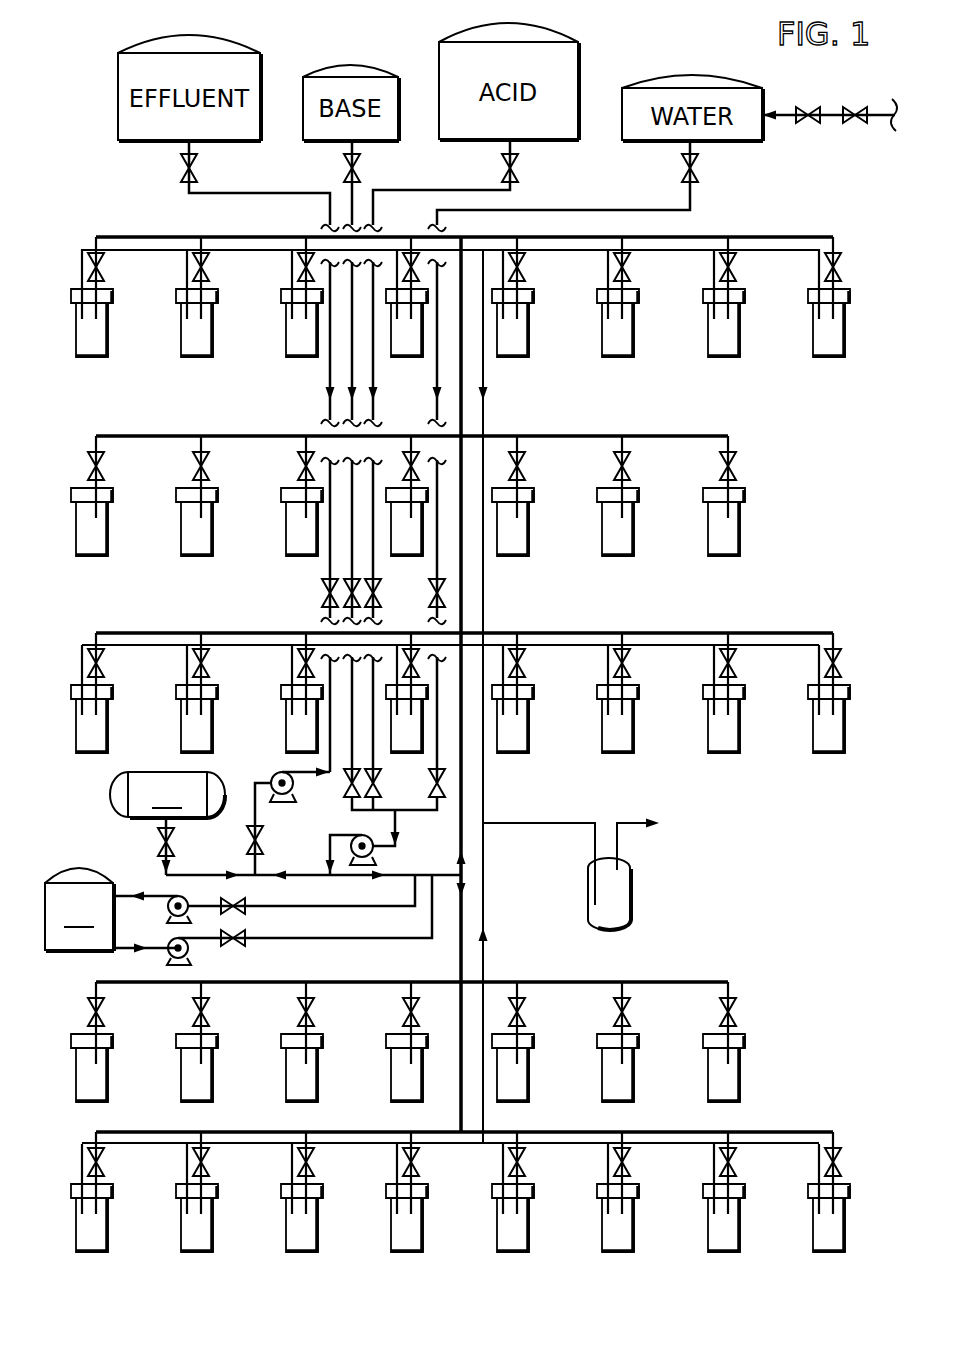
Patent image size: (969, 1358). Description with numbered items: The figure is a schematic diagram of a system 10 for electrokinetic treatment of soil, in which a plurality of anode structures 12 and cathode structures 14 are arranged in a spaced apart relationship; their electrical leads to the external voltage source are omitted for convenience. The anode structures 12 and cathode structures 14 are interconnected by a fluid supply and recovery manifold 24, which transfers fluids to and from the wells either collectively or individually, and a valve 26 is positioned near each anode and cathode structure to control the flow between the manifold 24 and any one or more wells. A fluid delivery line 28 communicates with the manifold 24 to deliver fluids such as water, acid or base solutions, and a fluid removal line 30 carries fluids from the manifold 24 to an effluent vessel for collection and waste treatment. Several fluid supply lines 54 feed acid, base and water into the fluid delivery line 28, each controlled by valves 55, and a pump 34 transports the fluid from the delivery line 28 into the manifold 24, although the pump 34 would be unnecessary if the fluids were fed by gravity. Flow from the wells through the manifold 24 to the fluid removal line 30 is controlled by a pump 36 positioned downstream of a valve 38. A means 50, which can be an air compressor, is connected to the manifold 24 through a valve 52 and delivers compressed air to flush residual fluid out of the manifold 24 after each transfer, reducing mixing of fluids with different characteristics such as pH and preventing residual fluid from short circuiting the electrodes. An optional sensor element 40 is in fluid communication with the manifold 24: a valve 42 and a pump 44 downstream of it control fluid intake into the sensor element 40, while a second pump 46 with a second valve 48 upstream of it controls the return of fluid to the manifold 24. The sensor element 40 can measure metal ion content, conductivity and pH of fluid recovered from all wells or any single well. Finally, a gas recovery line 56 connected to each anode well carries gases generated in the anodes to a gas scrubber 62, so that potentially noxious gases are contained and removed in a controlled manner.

The system 10 is at (62, 57).
The anode structures 12 is at (848, 325).
The cathode structures 14 is at (745, 520).
The fluid supply and recovery manifold 24 is at (820, 237).
The valve 26 is at (845, 258).
The fluid delivery line 28 is at (400, 823).
The fluid removal line 30 is at (330, 378).
The pump 34 is at (375, 846).
The pump 36 is at (273, 775).
The valve 38 is at (252, 843).
The sensor element 40 is at (79, 909).
The valve 42 is at (285, 940).
The pump 44 is at (167, 893).
The second pump 46 is at (167, 957).
The second valve 48 is at (233, 946).
The means 50 is at (167, 795).
The valve 52 is at (158, 842).
The fluid supply lines 54 is at (350, 200).
The valves 55 is at (440, 777).
The gas recovery line 56 is at (483, 413).
The gas scrubber 62 is at (630, 885).